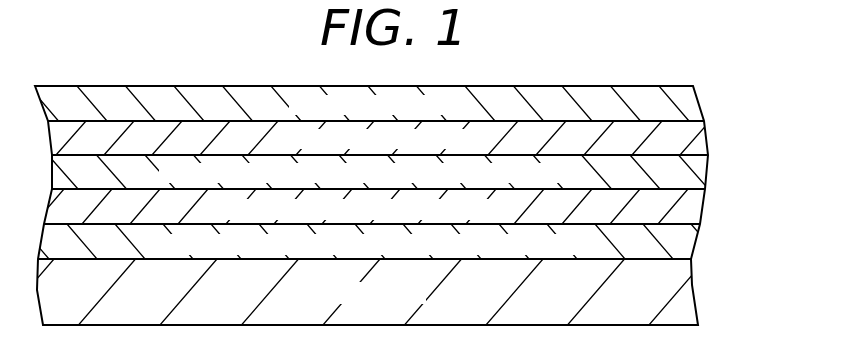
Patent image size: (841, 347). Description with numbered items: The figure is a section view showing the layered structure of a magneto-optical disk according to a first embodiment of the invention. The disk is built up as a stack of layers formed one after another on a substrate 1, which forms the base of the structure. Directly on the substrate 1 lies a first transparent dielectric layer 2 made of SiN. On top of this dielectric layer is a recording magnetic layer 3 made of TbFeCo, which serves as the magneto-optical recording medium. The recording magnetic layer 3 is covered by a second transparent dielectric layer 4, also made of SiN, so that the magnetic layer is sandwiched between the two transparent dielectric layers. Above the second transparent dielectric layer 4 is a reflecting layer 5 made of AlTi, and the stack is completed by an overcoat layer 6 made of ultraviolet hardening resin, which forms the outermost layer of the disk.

The substrate 1 is at (675, 288).
The first transparent dielectric layer 2 is at (675, 243).
The recording magnetic layer 3 is at (687, 212).
The second transparent dielectric layer 4 is at (695, 170).
The reflecting layer 5 is at (690, 143).
The overcoat layer 6 is at (688, 107).